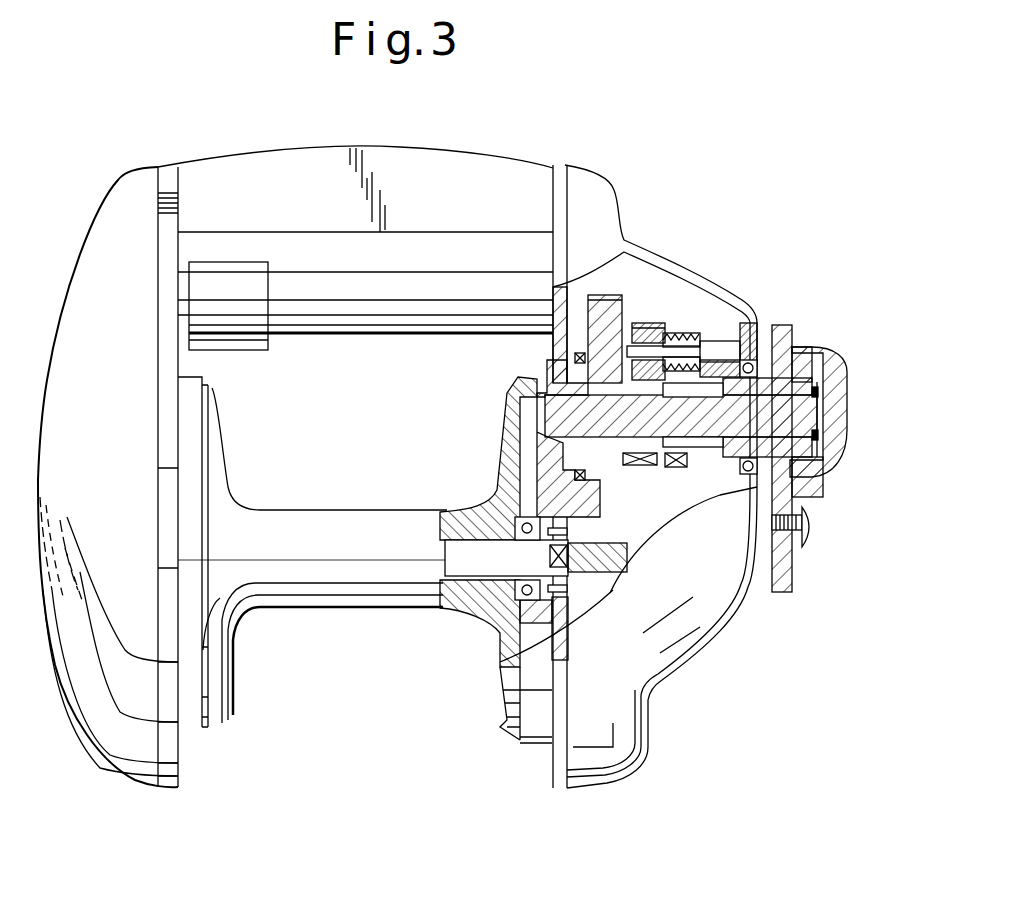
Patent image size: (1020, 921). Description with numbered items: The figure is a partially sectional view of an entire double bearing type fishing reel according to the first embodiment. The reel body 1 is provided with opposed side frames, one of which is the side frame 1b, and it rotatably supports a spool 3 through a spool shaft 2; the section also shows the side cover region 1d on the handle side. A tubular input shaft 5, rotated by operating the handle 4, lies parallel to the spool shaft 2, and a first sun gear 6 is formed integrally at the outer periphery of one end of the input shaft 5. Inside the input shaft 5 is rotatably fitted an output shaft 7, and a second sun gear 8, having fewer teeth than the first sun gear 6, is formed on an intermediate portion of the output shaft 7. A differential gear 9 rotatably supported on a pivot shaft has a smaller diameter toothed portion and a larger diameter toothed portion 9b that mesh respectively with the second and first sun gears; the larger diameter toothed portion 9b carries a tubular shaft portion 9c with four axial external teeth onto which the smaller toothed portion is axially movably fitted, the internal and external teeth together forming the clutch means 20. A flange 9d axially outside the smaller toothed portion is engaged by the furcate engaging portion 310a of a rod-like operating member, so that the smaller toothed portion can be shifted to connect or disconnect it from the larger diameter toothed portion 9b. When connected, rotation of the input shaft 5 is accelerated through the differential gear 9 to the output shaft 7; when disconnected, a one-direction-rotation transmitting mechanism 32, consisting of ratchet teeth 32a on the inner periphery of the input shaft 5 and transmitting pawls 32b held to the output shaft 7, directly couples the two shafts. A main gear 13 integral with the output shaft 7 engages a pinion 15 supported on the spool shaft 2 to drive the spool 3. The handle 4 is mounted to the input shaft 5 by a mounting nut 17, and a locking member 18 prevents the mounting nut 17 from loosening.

The reel body 1 is at (563, 165).
The side frame 1b is at (140, 178).
The right side cover 1d is at (622, 212).
The spool shaft 2 is at (463, 548).
The spool 3 is at (367, 517).
The handle 4 is at (790, 580).
The input shaft 5 is at (806, 358).
The first sun gear 6 is at (665, 480).
The output shaft 7 is at (790, 410).
The second sun gear 8 is at (640, 465).
The differential gear 9 is at (667, 332).
The larger diameter toothed portion 9b is at (657, 323).
The tubular shaft portion 9c is at (690, 332).
The flange 9d is at (680, 332).
The main gear 13 is at (611, 295).
The pinion 15 is at (606, 590).
The mounting nut 17 is at (817, 466).
The locking member 18 is at (847, 370).
The clutch means 20 is at (700, 330).
The furcate engaging portion 310a is at (705, 325).
The one-direction-rotation transmitting mechanism 32 is at (690, 470).
The ratchet teeth 32a is at (673, 470).
The transmitting pawls 32b is at (681, 470).